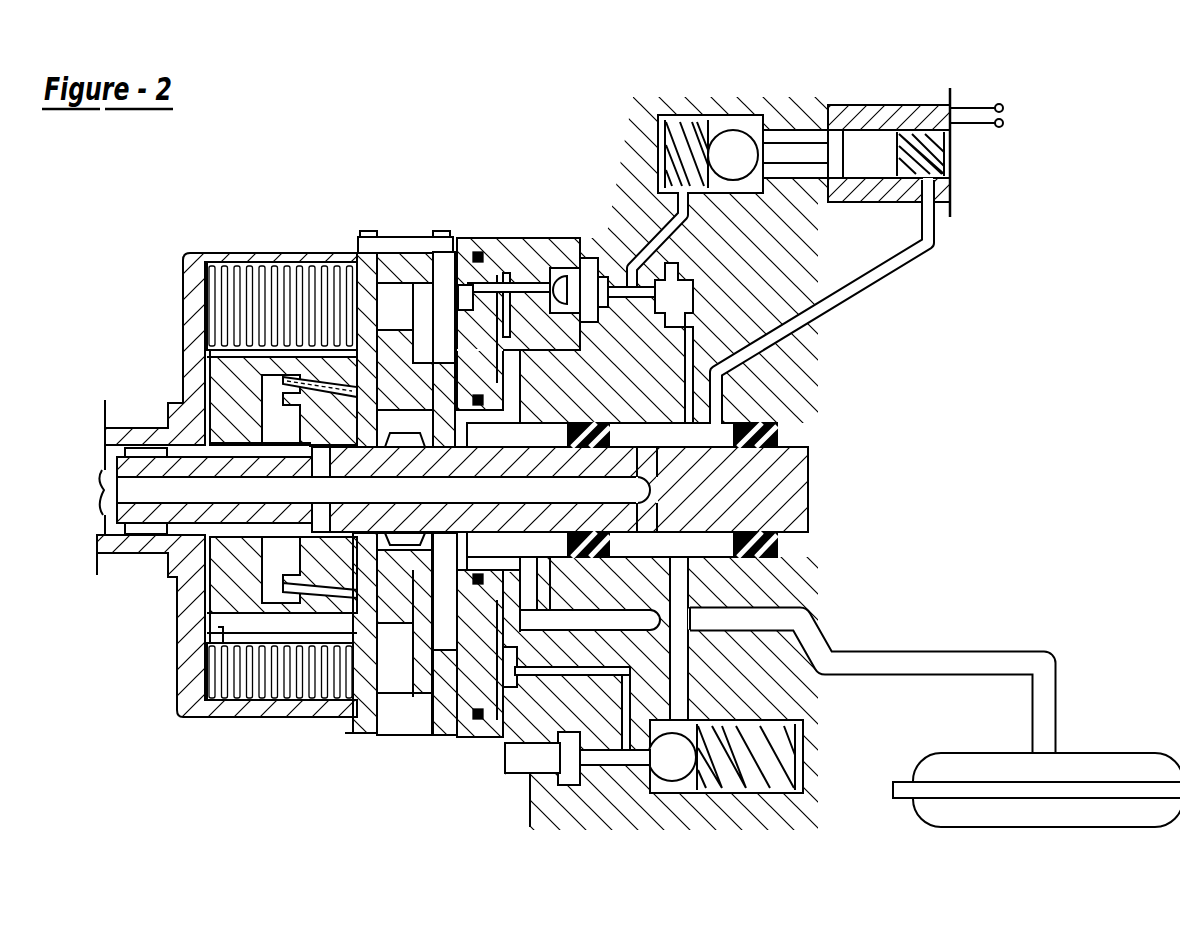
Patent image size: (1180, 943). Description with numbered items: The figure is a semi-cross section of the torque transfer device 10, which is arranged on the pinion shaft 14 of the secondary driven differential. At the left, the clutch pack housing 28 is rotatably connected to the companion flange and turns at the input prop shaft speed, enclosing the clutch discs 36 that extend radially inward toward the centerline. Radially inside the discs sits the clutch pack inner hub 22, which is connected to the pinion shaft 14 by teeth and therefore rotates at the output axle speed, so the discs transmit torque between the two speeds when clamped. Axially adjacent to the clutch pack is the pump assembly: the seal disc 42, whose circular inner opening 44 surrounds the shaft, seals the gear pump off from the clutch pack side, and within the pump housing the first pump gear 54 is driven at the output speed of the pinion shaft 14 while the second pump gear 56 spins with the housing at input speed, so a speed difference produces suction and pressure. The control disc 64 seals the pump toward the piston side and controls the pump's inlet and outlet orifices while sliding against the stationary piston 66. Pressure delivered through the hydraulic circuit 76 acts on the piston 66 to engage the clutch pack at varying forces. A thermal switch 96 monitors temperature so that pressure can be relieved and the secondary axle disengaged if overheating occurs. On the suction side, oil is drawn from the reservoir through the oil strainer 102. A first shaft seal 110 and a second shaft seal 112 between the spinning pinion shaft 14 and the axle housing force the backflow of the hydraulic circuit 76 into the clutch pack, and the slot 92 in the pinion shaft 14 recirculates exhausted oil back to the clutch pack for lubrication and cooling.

The torque transfer device 10 is at (558, 142).
The pinion shaft 14 is at (247, 520).
The clutch pack inner hub 22 is at (237, 393).
The clutch pack housing 28 is at (210, 717).
The clutch discs 36 is at (290, 262).
The seal disc 42 is at (357, 731).
The inner opening 44 is at (890, 118).
The first pump gear 54 is at (383, 607).
The second pump gear 56 is at (390, 688).
The control disc 64 is at (453, 233).
The piston 66 is at (477, 330).
The hydraulic circuit 76 is at (787, 323).
The slot 92 is at (343, 490).
The thermal switch 96 is at (688, 333).
The oil strainer 102 is at (1032, 790).
The first shaft seal 110 is at (607, 437).
The second shaft seal 112 is at (775, 433).